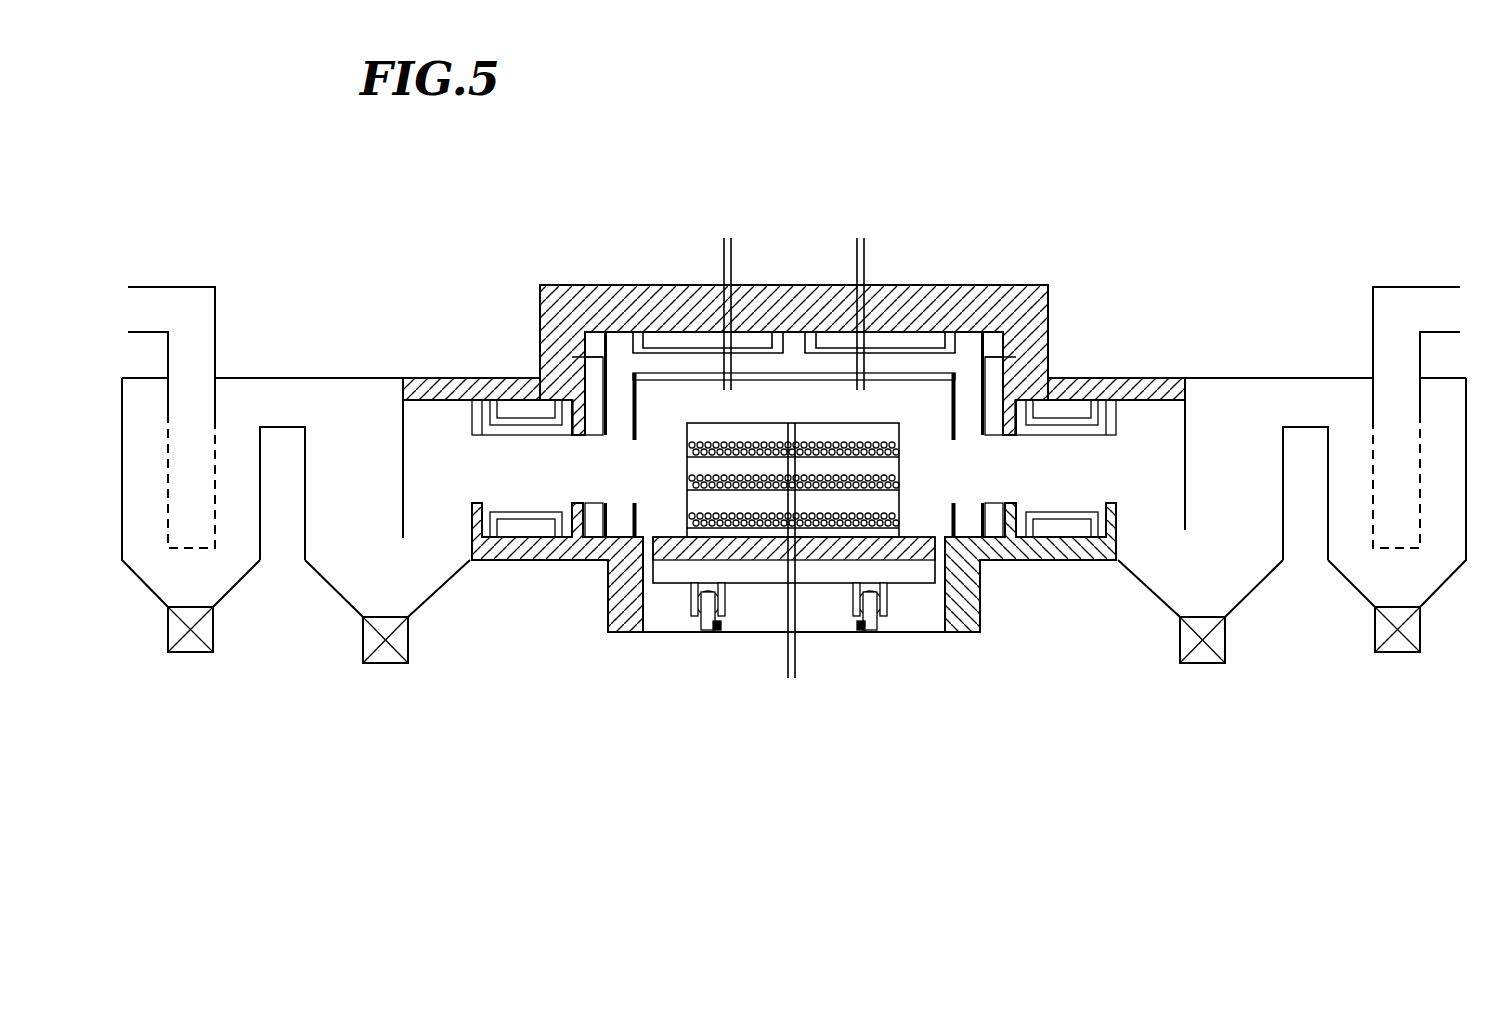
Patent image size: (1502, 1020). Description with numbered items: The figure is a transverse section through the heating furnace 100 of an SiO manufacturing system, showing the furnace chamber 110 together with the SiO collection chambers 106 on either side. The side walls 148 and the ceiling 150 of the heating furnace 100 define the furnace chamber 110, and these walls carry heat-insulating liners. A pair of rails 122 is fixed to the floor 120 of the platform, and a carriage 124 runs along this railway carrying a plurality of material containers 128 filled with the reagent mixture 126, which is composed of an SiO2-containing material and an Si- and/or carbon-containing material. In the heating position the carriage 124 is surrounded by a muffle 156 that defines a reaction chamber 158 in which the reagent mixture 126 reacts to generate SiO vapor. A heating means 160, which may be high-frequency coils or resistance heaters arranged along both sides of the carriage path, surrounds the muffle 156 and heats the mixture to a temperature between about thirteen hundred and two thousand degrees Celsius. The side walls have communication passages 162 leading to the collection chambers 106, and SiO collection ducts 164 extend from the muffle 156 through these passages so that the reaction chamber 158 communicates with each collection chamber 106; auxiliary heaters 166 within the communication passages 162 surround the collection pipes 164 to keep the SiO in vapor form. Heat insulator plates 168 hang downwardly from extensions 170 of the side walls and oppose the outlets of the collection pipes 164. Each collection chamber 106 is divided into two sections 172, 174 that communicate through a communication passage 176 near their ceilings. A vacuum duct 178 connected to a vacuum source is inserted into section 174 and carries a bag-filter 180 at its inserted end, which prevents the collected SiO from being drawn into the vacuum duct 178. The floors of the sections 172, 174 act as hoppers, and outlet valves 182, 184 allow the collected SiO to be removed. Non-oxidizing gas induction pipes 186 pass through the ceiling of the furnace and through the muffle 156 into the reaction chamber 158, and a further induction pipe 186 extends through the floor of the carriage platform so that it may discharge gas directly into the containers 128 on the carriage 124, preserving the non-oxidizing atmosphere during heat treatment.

The heating furnace 100 is at (873, 456).
The SiO collection chamber 106 is at (385, 356).
The furnace chamber 110 is at (1045, 305).
The floor 120 is at (832, 625).
The rails 122 is at (700, 630).
The carriage 124 is at (760, 575).
The reagent mixture 126 is at (690, 440).
The material container 128 is at (690, 470).
The side walls 148 is at (562, 338).
The ceiling 150 is at (808, 305).
The muffle 156 is at (677, 375).
The reaction chamber 158 is at (905, 395).
The heating means 160 is at (595, 425).
The communication passage 162 is at (523, 533).
The SiO collection duct 164 is at (547, 495).
The auxiliary heater 166 is at (500, 425).
The heat insulator plate 168 is at (402, 476).
The extension of the side wall 170 is at (418, 390).
The section 172 is at (347, 445).
The section 174 is at (147, 548).
The communication passage 176 is at (278, 405).
The vacuum duct 178 is at (163, 310).
The bag-filter 180 is at (215, 512).
The outlet valve 182 is at (388, 665).
The outlet valve 184 is at (195, 655).
The non-oxidizing gas induction pipe 186 is at (731, 245).